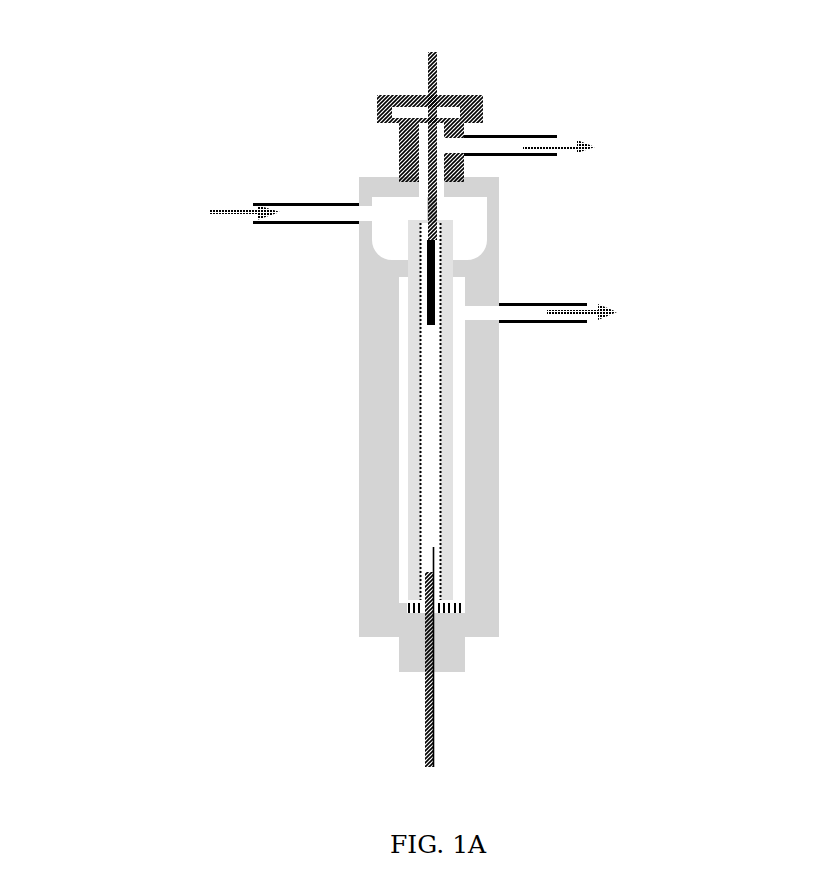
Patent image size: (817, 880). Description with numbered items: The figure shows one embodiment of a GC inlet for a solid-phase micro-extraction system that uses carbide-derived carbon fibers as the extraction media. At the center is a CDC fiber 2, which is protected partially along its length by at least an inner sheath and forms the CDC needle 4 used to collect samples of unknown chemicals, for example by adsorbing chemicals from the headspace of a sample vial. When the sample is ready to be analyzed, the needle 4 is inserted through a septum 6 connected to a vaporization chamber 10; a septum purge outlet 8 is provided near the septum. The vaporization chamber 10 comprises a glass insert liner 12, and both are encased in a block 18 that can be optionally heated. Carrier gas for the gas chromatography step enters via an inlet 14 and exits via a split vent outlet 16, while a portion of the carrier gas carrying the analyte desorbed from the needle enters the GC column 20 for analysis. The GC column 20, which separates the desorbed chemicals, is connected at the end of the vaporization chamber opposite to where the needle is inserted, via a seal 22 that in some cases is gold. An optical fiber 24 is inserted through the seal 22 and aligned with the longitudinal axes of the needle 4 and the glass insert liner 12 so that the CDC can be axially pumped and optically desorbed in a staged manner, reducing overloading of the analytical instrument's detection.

The CDC fiber 2 is at (425, 305).
The CDC needle 4 is at (427, 213).
The septum 6 is at (433, 108).
The septum purge outlet 8 is at (618, 146).
The vaporization chamber 10 is at (430, 462).
The glass insert liner 12 is at (415, 440).
The inlet 14 is at (200, 214).
The split vent outlet 16 is at (632, 312).
The block 18 is at (486, 488).
The GC column 20 is at (422, 685).
The seal 22 is at (405, 610).
The optical fiber 24 is at (437, 573).